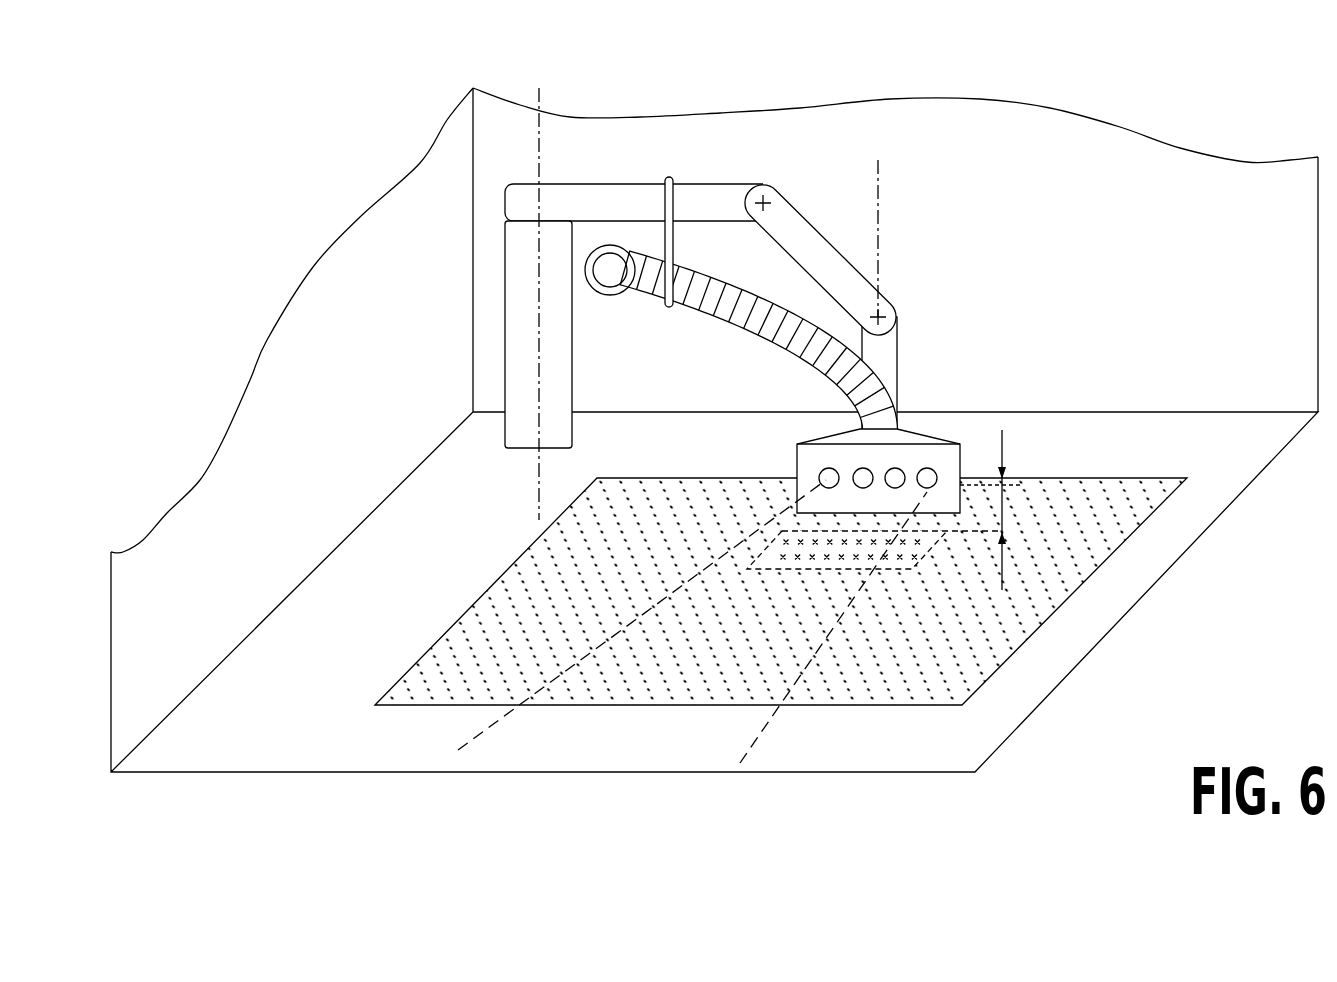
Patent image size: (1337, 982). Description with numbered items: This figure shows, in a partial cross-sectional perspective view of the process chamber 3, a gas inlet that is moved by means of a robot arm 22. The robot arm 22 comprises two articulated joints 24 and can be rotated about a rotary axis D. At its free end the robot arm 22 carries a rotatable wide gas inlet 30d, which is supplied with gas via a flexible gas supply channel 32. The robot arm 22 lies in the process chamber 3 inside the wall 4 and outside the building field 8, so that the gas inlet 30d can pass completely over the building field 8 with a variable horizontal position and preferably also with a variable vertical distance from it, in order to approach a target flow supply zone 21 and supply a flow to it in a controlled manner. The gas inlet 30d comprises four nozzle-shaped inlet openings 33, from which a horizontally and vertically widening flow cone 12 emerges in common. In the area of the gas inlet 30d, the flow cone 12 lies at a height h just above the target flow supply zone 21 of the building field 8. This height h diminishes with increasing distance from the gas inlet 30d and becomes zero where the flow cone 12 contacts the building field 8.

The process chamber 3 is at (1128, 194).
The wall 4 is at (1232, 268).
The building field 8 is at (1097, 522).
The flow cone 12 is at (802, 680).
The target flow supply zone 21 is at (915, 553).
The robot arm 22 is at (717, 200).
The articulated joints 24 is at (765, 200).
The gas inlet 30d is at (945, 466).
The flexible gas supply channel 32 is at (862, 372).
The nozzle-shaped inlet openings 33 is at (897, 470).
The rotary axis D is at (540, 100).
The height h is at (1002, 508).